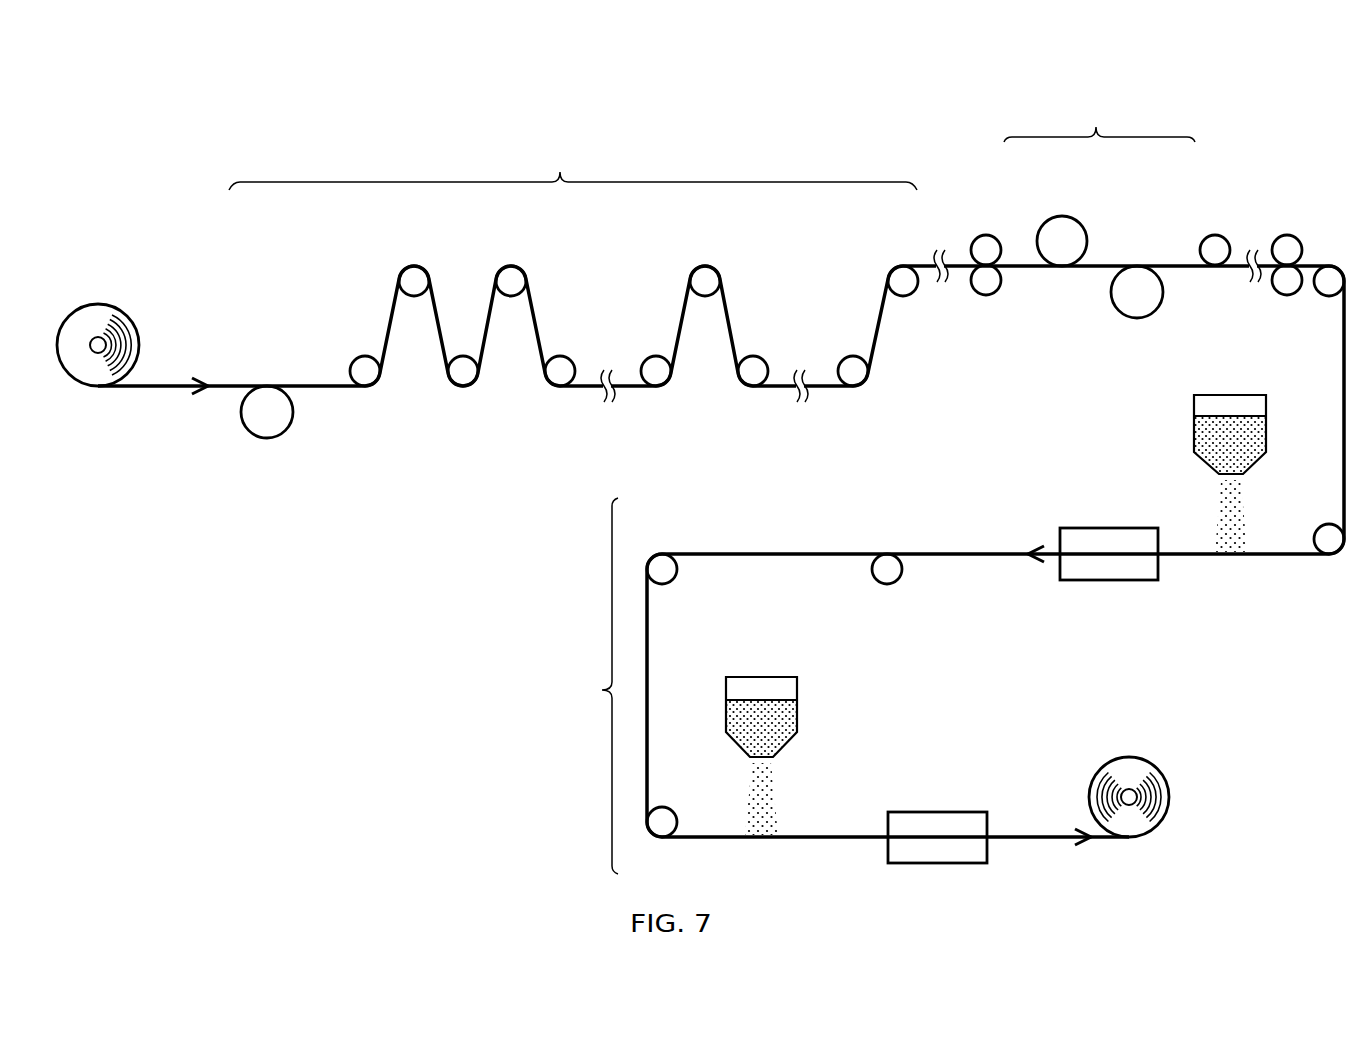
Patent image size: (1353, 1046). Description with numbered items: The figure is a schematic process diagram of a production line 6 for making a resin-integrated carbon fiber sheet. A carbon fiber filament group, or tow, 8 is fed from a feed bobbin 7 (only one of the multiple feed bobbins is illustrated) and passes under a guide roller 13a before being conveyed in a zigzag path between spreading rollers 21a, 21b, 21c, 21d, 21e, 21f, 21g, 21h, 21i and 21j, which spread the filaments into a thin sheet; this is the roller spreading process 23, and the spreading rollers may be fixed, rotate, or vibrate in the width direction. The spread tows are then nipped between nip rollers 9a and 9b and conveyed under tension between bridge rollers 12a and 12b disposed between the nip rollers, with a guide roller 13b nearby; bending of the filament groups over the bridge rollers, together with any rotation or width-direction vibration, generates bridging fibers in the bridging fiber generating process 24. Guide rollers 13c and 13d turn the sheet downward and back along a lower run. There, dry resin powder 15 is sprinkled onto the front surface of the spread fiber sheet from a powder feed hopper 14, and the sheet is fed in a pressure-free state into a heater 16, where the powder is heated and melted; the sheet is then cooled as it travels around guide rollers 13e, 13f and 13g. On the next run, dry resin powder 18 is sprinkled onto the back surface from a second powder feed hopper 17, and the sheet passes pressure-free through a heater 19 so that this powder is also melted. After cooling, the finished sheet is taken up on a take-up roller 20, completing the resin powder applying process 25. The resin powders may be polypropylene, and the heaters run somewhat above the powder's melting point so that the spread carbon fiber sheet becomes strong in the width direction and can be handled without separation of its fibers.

The manufacturing apparatus 6 is at (205, 153).
The feed bobbin 7 is at (98, 305).
The carbon fiber filament group 8 is at (301, 384).
The nip roller 9a is at (986, 297).
The nip roller 9b is at (1287, 236).
The bridge roller 12a is at (1064, 216).
The bridge roller 12b is at (1140, 319).
The guide roller 13a is at (268, 440).
The guide roller 13b is at (1216, 236).
The guide roller 13c is at (1325, 296).
The guide roller 13d is at (1320, 526).
The guide roller 13e is at (887, 585).
The guide roller 13f is at (664, 585).
The guide roller 13g is at (662, 806).
The powder feed hopper 14 is at (1194, 403).
The dry resin powder 15 is at (1222, 494).
The heater 16 is at (1108, 527).
The powder feed hopper 17 is at (797, 690).
The dry resin powder 18 is at (772, 793).
The heater 19 is at (930, 811).
The take-up roller 20 is at (1129, 757).
The spreading roller 21a is at (360, 357).
The spreading roller 21b is at (414, 266).
The spreading roller 21c is at (463, 388).
The spreading roller 21d is at (511, 266).
The spreading roller 21e is at (556, 388).
The spreading roller 21f is at (662, 388).
The spreading roller 21g is at (705, 266).
The spreading roller 21h is at (748, 388).
The spreading roller 21i is at (862, 388).
The spreading roller 21j is at (893, 268).
The roller spreading process 23 is at (549, 164).
The bridging fiber generating process 24 is at (1085, 117).
The resin powder applying process 25 is at (566, 703).